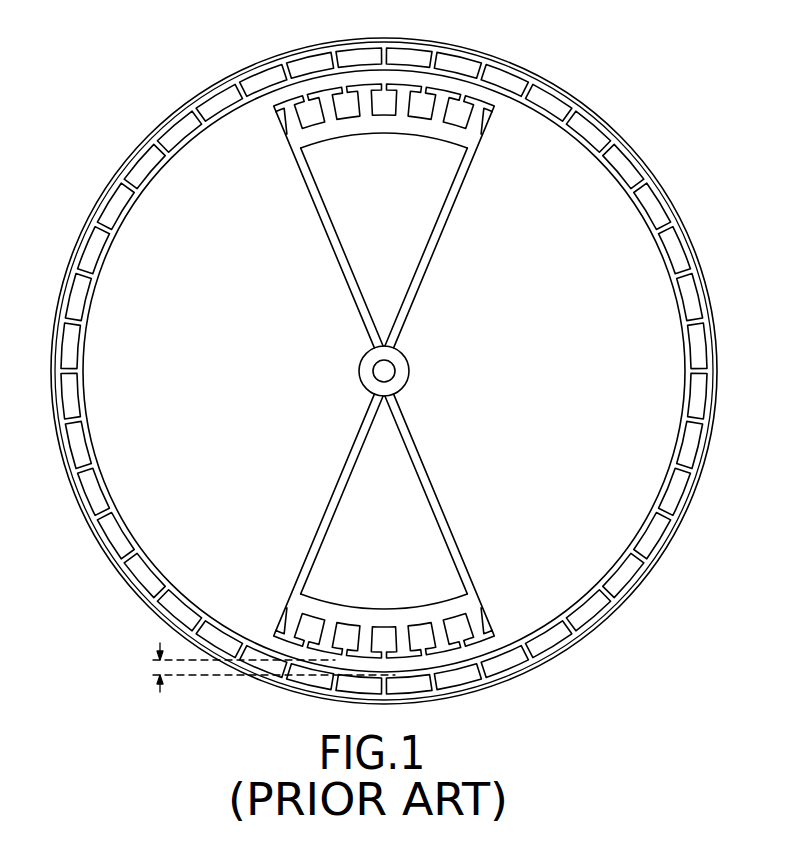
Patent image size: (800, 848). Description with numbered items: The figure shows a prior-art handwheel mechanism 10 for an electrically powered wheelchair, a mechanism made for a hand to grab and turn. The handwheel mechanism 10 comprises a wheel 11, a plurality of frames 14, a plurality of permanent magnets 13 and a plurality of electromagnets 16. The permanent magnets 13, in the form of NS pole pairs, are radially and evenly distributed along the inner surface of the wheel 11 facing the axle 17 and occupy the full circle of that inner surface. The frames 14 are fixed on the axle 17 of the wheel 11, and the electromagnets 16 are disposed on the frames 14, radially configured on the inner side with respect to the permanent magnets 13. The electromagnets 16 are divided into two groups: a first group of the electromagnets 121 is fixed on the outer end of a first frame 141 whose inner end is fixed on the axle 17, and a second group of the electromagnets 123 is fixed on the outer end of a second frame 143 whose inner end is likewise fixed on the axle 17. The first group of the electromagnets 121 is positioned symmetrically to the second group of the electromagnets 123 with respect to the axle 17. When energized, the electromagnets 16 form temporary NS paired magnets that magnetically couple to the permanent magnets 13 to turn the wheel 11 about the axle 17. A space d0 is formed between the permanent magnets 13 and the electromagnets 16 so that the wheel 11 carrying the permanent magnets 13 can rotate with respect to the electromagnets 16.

The handwheel mechanism 10 is at (58, 98).
The wheel 11 is at (692, 241).
The permanent magnets 13 is at (706, 340).
The frames 14 is at (406, 371).
The first frame 141 is at (433, 256).
The second frame 143 is at (510, 278).
The first group of the electromagnets 121 is at (377, 148).
The second group of the electromagnets 123 is at (378, 605).
The electromagnets 16 is at (497, 114).
The axle 17 is at (395, 367).
The space d0 is at (262, 667).